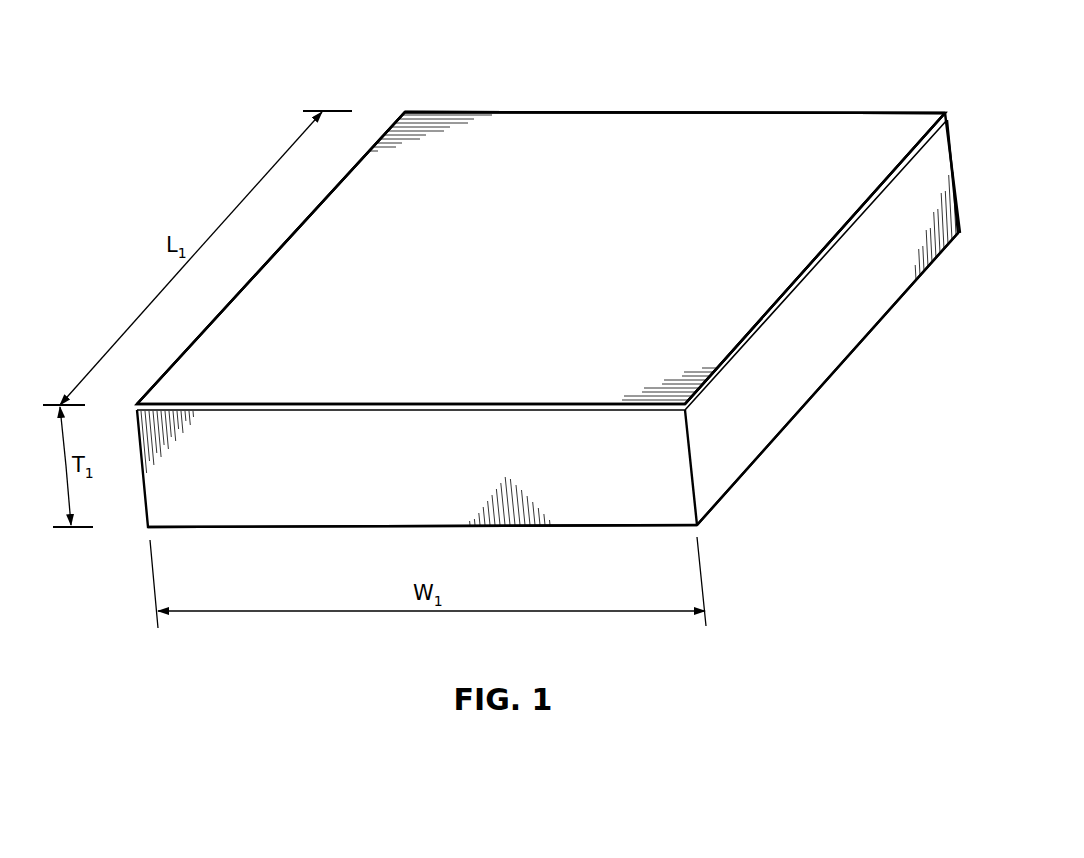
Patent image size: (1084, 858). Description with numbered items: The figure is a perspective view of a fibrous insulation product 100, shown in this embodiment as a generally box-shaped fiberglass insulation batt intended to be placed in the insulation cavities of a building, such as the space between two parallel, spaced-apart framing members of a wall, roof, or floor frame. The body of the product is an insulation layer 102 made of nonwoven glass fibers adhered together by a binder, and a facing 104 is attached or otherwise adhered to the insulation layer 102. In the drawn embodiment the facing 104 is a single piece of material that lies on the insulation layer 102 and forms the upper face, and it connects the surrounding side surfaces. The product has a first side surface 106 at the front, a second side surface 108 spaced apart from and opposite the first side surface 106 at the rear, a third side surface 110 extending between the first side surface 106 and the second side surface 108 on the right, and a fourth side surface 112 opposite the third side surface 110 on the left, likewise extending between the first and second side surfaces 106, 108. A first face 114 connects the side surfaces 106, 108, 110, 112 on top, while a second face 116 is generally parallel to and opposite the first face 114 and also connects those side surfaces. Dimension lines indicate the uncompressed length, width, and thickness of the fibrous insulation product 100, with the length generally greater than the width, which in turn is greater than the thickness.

The fibrous insulation product 100 is at (178, 63).
The insulation layer 102 is at (650, 430).
The facing 104 is at (710, 380).
The first side surface 106 is at (635, 440).
The second side surface 108 is at (773, 112).
The third side surface 110 is at (833, 337).
The fourth side surface 112 is at (201, 331).
The first face 114 is at (542, 268).
The second face 116 is at (745, 475).